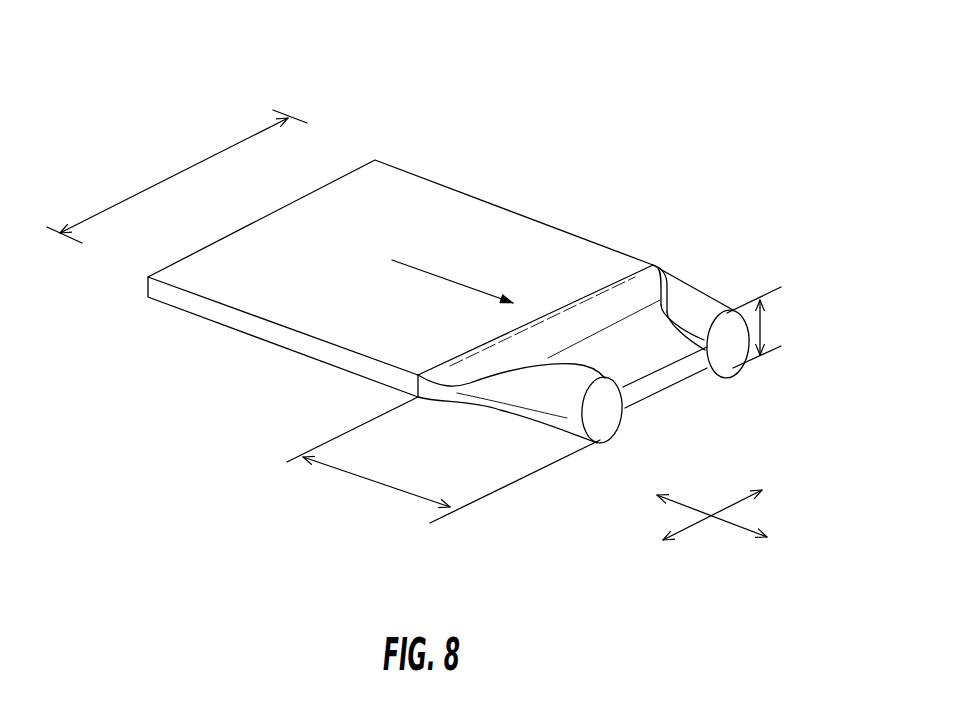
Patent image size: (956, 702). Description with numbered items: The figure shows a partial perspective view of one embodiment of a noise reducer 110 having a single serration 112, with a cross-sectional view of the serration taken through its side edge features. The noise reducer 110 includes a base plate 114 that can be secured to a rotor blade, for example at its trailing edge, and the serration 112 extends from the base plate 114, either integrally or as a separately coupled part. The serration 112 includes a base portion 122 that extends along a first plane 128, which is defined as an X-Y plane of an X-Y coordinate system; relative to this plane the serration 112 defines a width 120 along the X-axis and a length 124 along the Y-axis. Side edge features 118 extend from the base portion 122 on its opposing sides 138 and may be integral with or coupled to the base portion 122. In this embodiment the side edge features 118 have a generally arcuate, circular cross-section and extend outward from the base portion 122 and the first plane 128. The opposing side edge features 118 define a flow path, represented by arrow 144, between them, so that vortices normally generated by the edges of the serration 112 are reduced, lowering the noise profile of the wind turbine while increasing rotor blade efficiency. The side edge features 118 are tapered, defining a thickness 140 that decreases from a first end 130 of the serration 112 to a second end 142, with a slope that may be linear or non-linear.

The noise reducer 110 is at (130, 65).
The serration 112 is at (775, 250).
The base plate 114 is at (418, 187).
The side edge feature 118 is at (692, 290).
The width 120 is at (183, 170).
The base portion 122 is at (633, 275).
The length 124 is at (373, 487).
The first plane 128 is at (748, 477).
The first end 130 is at (665, 270).
The opposing sides 138 is at (665, 320).
The thickness 140 is at (763, 323).
The second end 142 is at (602, 430).
The flow path arrow 144 is at (437, 280).